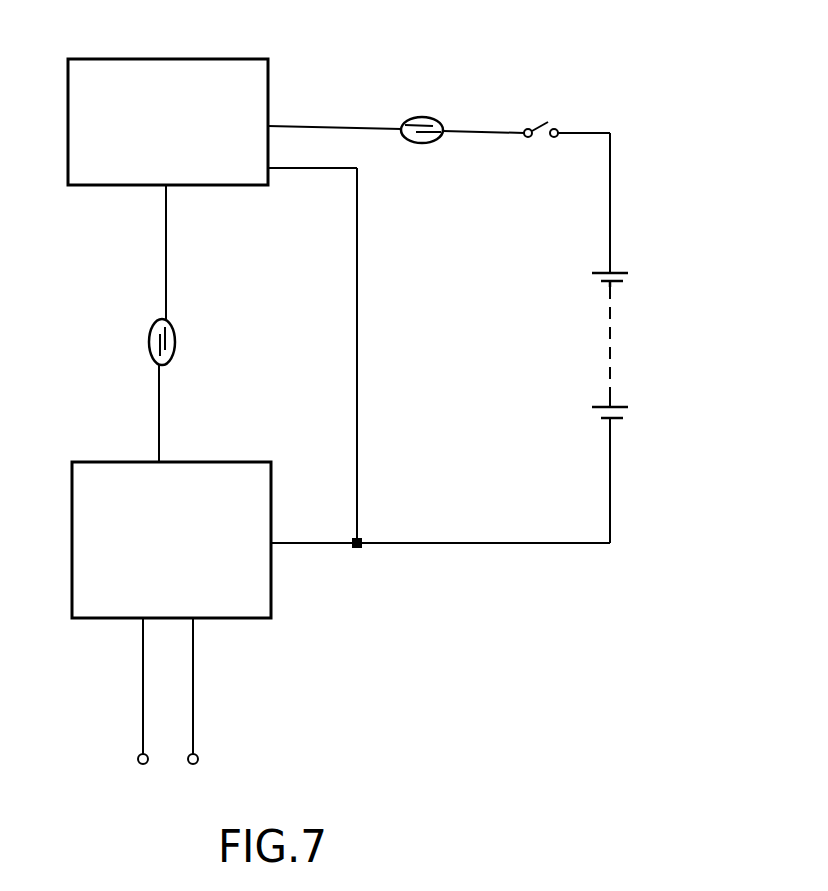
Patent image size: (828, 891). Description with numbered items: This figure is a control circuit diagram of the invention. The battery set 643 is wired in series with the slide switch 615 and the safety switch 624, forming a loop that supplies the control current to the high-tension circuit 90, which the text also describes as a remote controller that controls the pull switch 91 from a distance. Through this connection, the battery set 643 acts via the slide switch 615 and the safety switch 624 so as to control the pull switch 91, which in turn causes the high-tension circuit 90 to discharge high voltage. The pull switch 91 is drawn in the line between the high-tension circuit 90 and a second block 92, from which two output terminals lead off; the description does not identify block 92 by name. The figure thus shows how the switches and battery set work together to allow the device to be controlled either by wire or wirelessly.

The high-tension circuit 90 is at (168, 122).
The circuit block 92 is at (171, 613).
The pull switch 91 is at (186, 342).
The safety switch 624 is at (418, 117).
The slide switch 615 is at (557, 127).
The battery set 643 is at (661, 324).